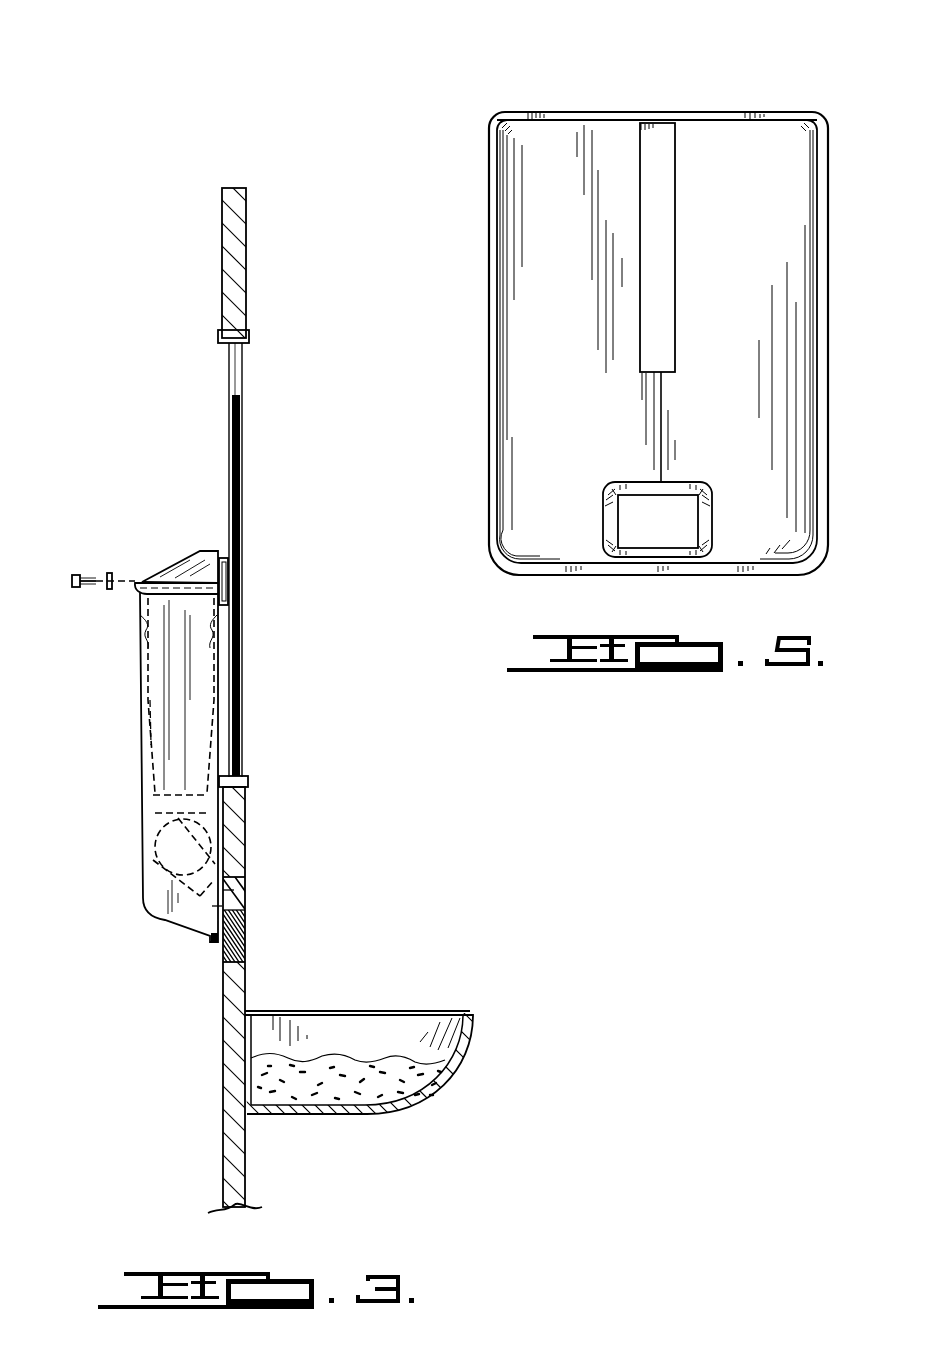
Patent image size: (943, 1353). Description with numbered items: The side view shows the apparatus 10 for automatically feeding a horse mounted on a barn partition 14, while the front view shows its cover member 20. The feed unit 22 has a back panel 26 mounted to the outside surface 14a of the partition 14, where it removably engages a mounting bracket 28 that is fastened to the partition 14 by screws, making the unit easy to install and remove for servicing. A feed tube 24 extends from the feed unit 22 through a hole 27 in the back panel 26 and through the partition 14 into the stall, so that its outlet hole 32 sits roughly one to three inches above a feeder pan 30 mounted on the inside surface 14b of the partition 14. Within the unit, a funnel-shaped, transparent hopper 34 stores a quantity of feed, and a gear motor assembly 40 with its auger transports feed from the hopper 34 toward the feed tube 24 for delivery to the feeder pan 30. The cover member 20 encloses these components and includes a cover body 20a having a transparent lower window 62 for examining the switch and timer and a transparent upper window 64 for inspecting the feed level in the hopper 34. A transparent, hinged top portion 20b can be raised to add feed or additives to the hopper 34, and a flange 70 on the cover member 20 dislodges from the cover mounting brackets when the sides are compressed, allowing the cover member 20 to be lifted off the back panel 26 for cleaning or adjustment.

In FIG. 3, the apparatus 10 is at (91, 624).
In FIG. 5, the apparatus 10 is at (805, 86).
In FIG. 3, the partition 14 is at (230, 188).
In FIG. 3, the outside surface 14a is at (228, 427).
In FIG. 3, the inside surface 14b is at (247, 1141).
In FIG. 3, the cover member 20 is at (138, 694).
In FIG. 5, the cover member 20 is at (832, 283).
In FIG. 3, the cover body 20a is at (140, 668).
In FIG. 5, the cover body 20a is at (795, 181).
In FIG. 3, the top portion 20b is at (195, 561).
In FIG. 5, the top portion 20b is at (624, 110).
In FIG. 3, the feed unit 22 is at (150, 775).
In FIG. 3, the feed tube 24 is at (245, 891).
In FIG. 3, the back panel 26 is at (218, 692).
In FIG. 3, the hole 27 is at (212, 907).
In FIG. 3, the mounting bracket 28 is at (221, 558).
In FIG. 3, the feeder pan 30 is at (440, 1080).
In FIG. 3, the outlet hole 32 is at (247, 935).
In FIG. 3, the hopper 34 is at (150, 737).
In FIG. 3, the gear motor assembly 40 is at (141, 845).
In FIG. 5, the lower window 62 is at (645, 546).
In FIG. 5, the upper window 64 is at (665, 269).
In FIG. 5, the flange 70 is at (490, 317).